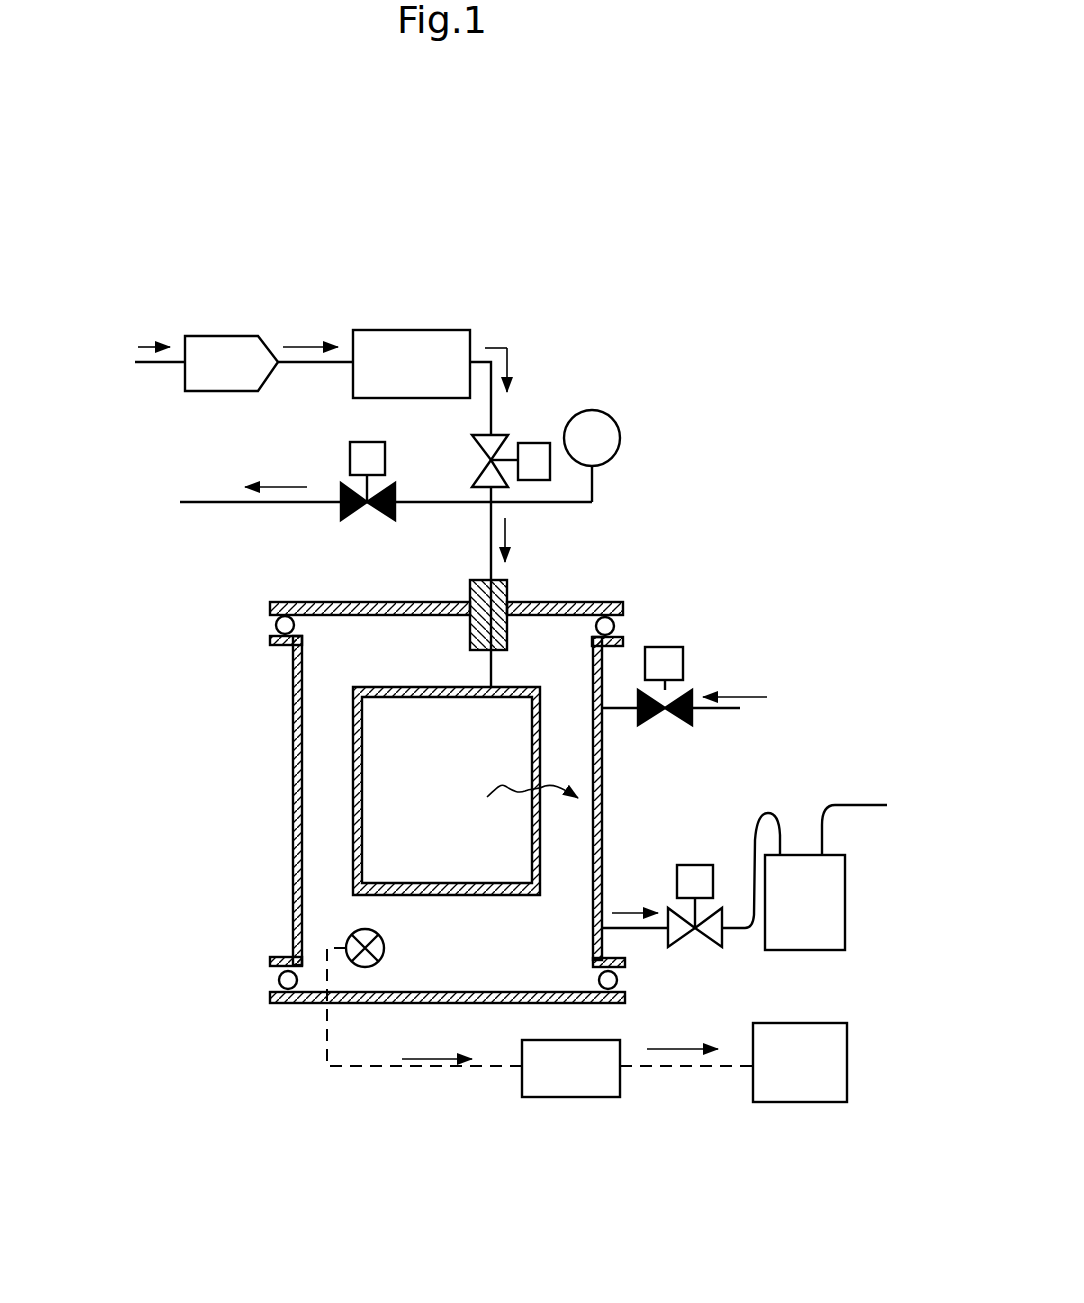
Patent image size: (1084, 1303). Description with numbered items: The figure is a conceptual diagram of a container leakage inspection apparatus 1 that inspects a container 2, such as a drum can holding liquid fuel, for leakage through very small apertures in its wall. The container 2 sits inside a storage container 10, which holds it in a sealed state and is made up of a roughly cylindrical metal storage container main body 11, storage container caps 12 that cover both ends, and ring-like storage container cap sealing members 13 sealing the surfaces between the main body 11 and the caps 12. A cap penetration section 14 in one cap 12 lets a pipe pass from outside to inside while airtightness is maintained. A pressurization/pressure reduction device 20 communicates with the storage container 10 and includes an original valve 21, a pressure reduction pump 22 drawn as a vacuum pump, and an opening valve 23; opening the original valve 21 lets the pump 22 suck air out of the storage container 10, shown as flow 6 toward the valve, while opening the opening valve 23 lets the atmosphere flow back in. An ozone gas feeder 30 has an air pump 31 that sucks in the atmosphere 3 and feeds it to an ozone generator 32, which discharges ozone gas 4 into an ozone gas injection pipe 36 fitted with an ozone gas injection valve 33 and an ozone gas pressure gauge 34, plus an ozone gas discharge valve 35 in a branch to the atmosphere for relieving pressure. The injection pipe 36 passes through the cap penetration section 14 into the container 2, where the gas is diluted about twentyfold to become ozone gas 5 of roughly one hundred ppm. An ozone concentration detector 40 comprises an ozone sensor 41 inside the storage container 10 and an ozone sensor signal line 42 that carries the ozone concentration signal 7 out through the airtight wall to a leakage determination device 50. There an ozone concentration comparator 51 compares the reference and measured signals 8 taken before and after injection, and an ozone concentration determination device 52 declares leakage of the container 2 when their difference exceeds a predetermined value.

The container leakage inspection apparatus 1 is at (730, 490).
The container 2 is at (353, 720).
The atmosphere 3 is at (142, 347).
The ozone gas 4 is at (507, 348).
The ozone gas 5 is at (503, 785).
The exhaust flow 6 is at (612, 913).
The ozone concentration signal 7 is at (433, 1059).
The reference signal / measured signal 8 is at (676, 1049).
The storage container 10 is at (268, 792).
The storage container main body 11 is at (293, 845).
The storage container cap 12 is at (275, 597).
The storage container cap sealing member 13 is at (275, 622).
The cap penetration section 14 is at (510, 593).
The pressurization/pressure reduction device 20 is at (783, 787).
The original valve 21 is at (692, 863).
The pressure reduction pump 22 is at (838, 905).
The opening valve 23 is at (680, 647).
The ozone gas feeder 30 is at (538, 323).
The air pump 31 is at (228, 343).
The ozone generator 32 is at (420, 345).
The ozone gas injection valve 33 is at (495, 447).
The ozone gas pressure gauge 34 is at (593, 428).
The ozone gas discharge valve 35 is at (350, 459).
The ozone gas injection pipe 36 is at (485, 537).
The ozone concentration detector 40 is at (340, 975).
The ozone sensor 41 is at (352, 943).
The ozone sensor signal line 42 is at (357, 1070).
The leakage determination device 50 is at (503, 1097).
The ozone concentration comparator 51 is at (538, 1078).
The ozone concentration determination device 52 is at (770, 1072).